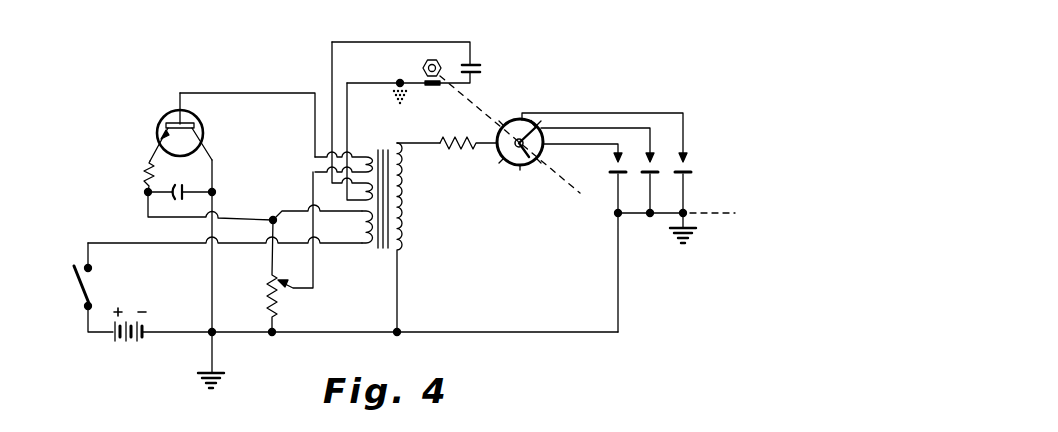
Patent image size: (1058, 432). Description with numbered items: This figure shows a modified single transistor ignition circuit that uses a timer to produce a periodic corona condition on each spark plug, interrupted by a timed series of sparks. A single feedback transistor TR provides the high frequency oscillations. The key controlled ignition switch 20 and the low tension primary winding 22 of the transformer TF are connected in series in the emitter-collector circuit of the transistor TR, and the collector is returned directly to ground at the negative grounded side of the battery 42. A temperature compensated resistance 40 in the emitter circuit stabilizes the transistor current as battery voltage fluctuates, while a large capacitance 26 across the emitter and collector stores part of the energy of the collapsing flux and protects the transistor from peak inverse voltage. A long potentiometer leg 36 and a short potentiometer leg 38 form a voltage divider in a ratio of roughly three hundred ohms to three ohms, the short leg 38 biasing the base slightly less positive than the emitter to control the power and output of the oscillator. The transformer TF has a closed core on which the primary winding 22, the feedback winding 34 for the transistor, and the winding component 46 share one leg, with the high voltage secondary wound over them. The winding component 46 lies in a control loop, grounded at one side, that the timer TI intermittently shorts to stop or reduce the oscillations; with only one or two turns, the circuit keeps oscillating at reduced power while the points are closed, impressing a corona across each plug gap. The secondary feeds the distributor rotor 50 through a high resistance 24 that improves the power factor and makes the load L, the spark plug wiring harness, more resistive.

The ignition switch 20 is at (73, 283).
The primary winding 22 is at (362, 230).
The high resistance 24 is at (449, 137).
The capacitance 26 is at (180, 201).
The feedback winding 34 is at (373, 159).
The long potentiometer leg 36 is at (268, 312).
The short potentiometer leg 38 is at (268, 276).
The temperature compensated resistance 40 is at (149, 175).
The battery 42 is at (128, 343).
The winding component 46 is at (368, 186).
The distributor rotor 50 is at (517, 120).
The transistor TR is at (168, 118).
The transformer TF is at (389, 251).
The timer TI is at (442, 58).
The load L is at (685, 141).